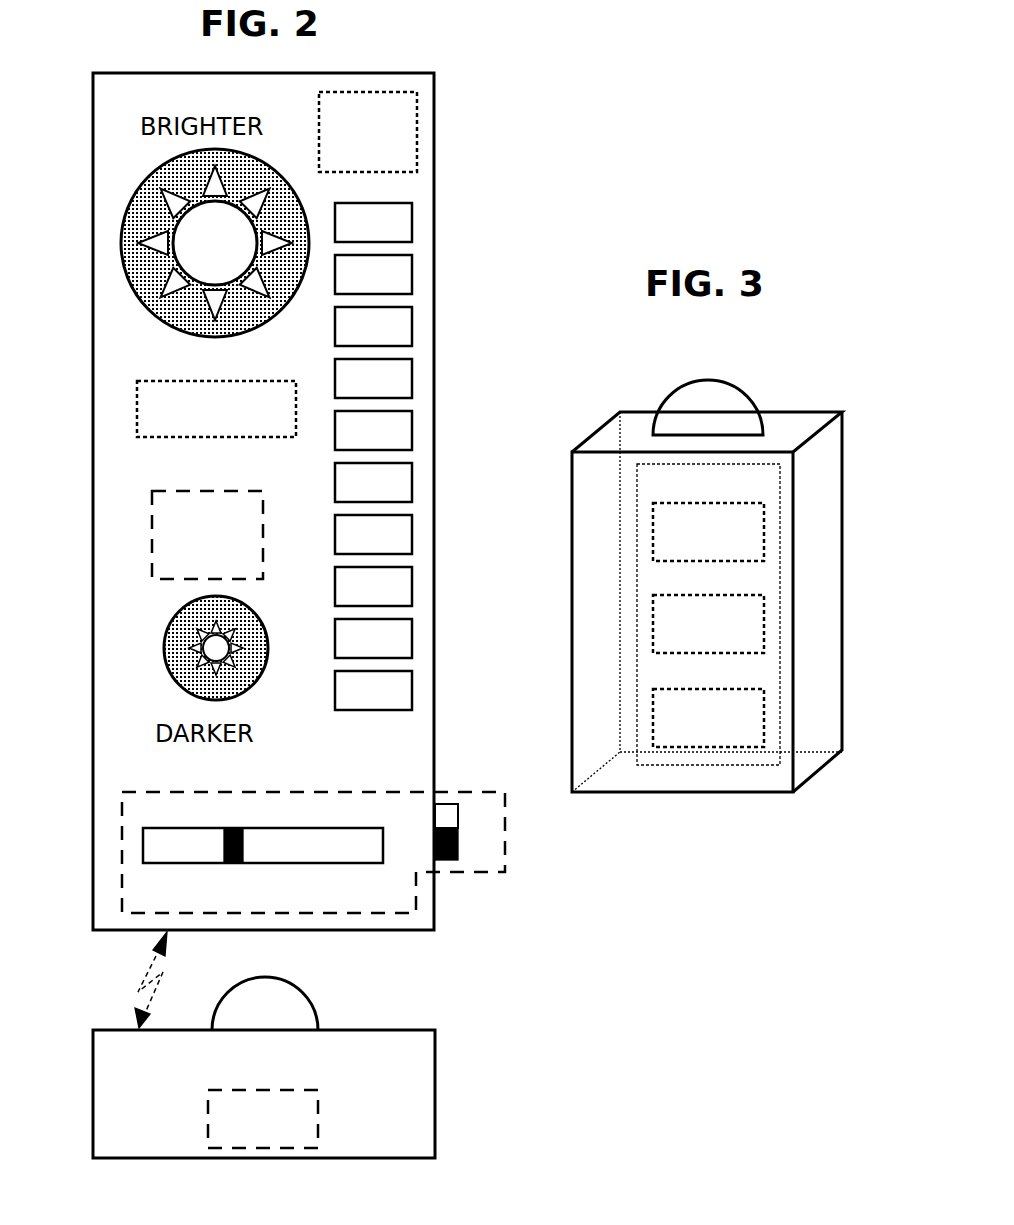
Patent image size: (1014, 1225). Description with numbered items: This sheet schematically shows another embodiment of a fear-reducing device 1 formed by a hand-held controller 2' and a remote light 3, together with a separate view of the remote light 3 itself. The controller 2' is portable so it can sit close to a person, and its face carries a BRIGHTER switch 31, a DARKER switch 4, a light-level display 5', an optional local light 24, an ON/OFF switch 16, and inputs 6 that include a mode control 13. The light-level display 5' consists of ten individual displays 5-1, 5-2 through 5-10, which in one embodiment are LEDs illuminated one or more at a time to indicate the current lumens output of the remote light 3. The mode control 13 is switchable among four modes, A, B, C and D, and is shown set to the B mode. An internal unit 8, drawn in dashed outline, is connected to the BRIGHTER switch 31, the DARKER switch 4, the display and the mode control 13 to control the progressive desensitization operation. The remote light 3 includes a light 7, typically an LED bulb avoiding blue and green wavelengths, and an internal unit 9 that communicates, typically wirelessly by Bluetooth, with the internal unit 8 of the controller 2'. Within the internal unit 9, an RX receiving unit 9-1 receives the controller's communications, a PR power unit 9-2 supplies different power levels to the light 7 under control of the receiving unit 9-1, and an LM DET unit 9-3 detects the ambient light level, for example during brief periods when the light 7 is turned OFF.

In FIG. 2, the fear-reducing device 1 is at (490, 983).
In FIG. 2, the controller 2' is at (311, 509).
In FIG. 2, the remote light 3 is at (435, 1118).
In FIG. 3, the remote light 3 is at (643, 412).
In FIG. 2, the DARKER switch 4 is at (165, 652).
In FIG. 2, the light-level display 5' is at (407, 511).
In FIG. 2, the display 5-1 is at (398, 690).
In FIG. 2, the display 5-2 is at (405, 636).
In FIG. 2, the display 5-10 is at (398, 222).
In FIG. 2, the inputs 6 is at (122, 810).
In FIG. 2, the light 7 is at (300, 1010).
In FIG. 3, the light 7 is at (740, 385).
In FIG. 2, the internal unit 8 is at (150, 538).
In FIG. 2, the internal unit 9 is at (318, 1110).
In FIG. 3, the internal unit 9 is at (680, 765).
In FIG. 3, the RX receiving unit 9-1 is at (720, 689).
In FIG. 3, the PR power unit 9-2 is at (720, 595).
In FIG. 3, the LM DET unit 9-3 is at (720, 503).
In FIG. 2, the mode control 13 is at (150, 847).
In FIG. 2, the ON/OFF switch 16 is at (458, 828).
In FIG. 2, the local light 24 is at (372, 92).
In FIG. 2, the BRIGHTER switch 31 is at (155, 218).